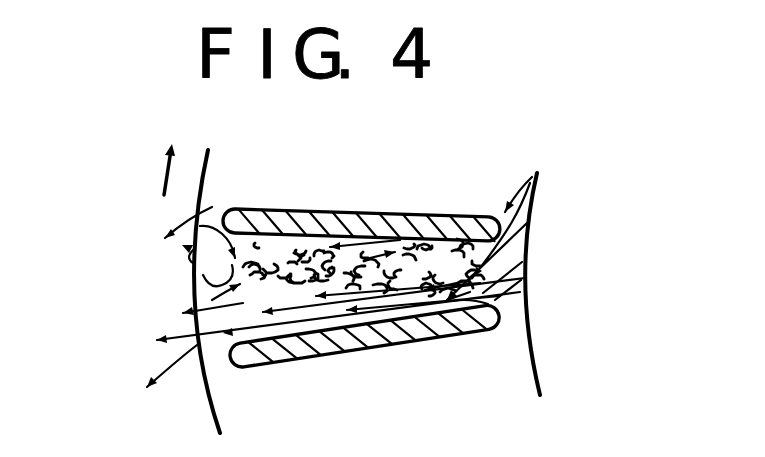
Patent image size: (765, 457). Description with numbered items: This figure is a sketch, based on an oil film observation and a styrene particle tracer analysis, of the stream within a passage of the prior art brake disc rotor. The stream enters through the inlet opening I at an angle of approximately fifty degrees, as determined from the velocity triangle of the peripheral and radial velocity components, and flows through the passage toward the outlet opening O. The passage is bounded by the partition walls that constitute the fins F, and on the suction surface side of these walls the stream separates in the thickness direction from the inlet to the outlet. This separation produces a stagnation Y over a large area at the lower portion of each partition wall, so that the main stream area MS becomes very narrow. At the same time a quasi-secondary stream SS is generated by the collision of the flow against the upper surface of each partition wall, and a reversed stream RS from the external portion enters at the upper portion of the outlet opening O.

The fins F is at (316, 211).
The stagnation Y is at (397, 212).
The inlet opening I is at (462, 285).
The quasi-secondary stream SS is at (477, 298).
The main stream area MS is at (370, 322).
The reversed stream RS is at (193, 271).
The outlet opening O is at (195, 287).